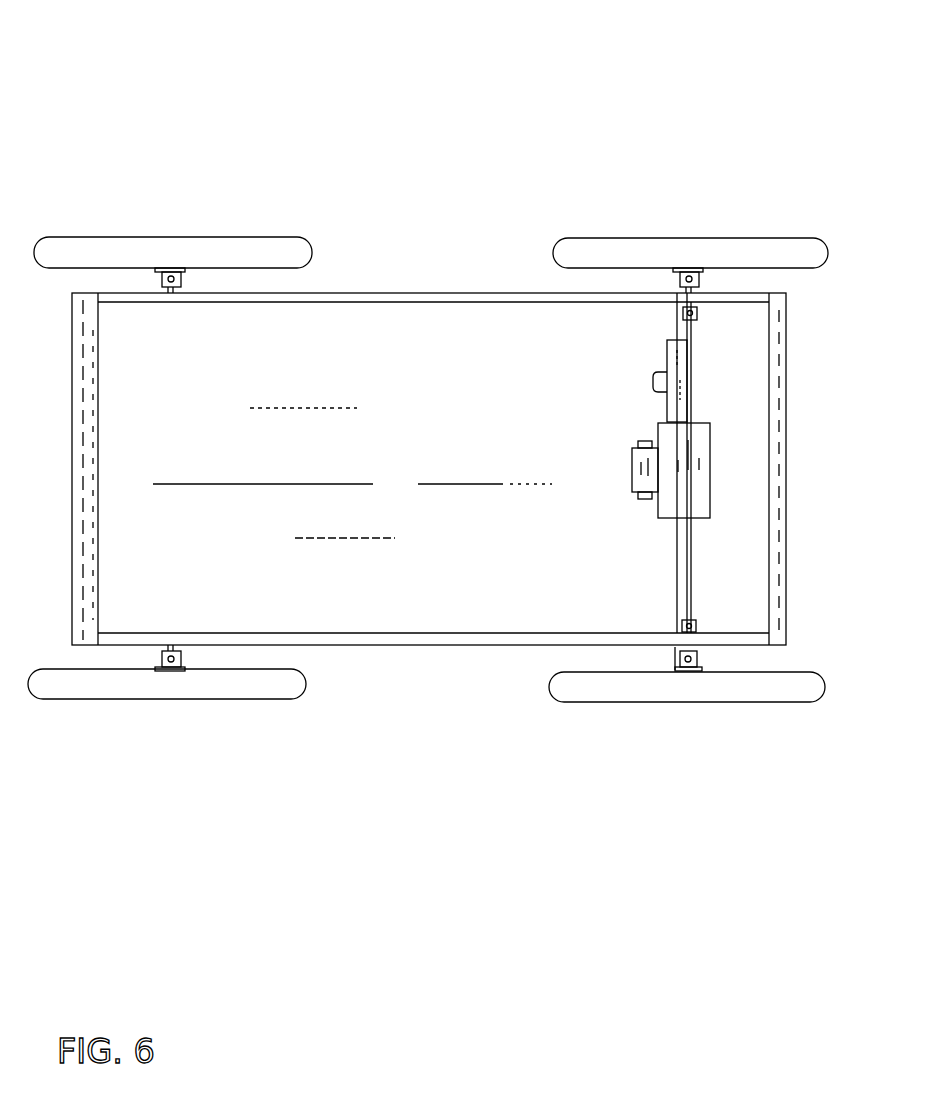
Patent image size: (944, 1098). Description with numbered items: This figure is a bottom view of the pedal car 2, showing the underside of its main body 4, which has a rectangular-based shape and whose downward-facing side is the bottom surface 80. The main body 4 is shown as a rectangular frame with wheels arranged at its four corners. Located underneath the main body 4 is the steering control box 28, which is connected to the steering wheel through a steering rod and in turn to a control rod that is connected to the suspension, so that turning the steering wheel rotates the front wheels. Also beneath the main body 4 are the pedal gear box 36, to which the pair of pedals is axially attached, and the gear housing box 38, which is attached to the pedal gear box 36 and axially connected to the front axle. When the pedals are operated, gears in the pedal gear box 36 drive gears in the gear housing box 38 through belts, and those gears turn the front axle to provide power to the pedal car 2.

The pedal car 2 is at (428, 396).
The main body 4 is at (342, 308).
The steering control box 28 is at (678, 376).
The pedal gear box 36 is at (642, 477).
The gear housing box 38 is at (687, 492).
The bottom surface 80 is at (398, 595).